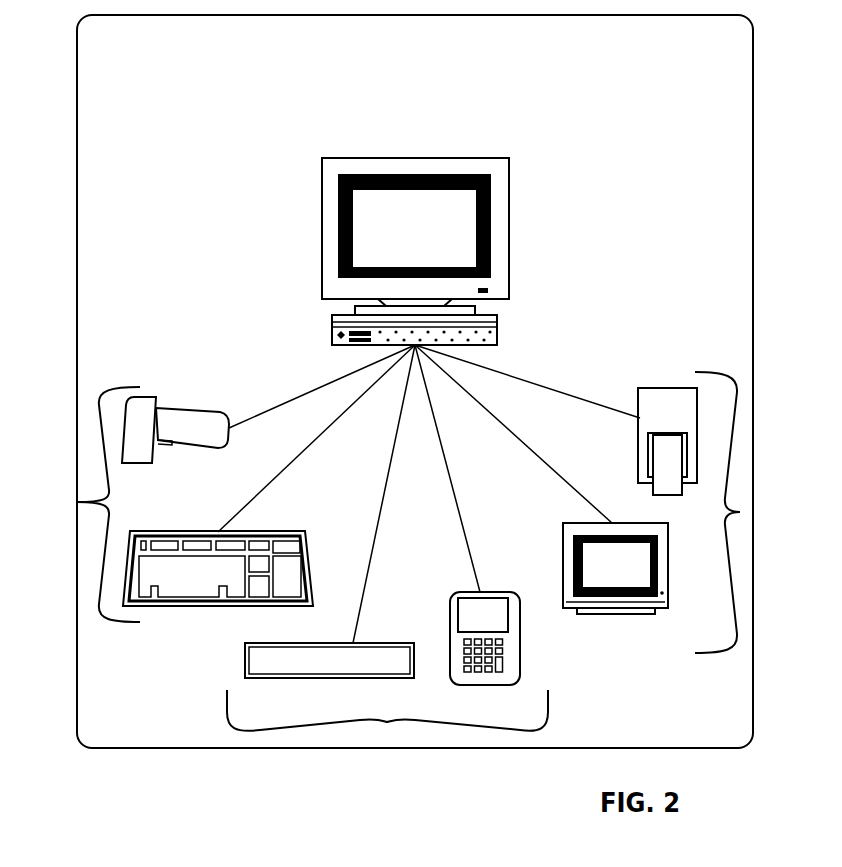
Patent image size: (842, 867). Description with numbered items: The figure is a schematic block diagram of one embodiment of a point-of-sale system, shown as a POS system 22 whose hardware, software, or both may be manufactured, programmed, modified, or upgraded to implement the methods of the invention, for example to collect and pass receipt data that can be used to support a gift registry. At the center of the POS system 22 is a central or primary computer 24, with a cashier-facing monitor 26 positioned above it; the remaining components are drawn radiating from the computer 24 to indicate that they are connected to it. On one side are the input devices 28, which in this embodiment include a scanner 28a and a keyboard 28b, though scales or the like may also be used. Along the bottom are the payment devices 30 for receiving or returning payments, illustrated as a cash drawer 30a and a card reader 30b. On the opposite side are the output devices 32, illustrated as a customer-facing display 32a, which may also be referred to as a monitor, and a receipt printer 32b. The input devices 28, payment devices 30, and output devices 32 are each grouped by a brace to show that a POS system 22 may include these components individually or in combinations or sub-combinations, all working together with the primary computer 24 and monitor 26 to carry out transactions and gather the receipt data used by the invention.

The POS system 22 is at (587, 84).
The primary computer 24 is at (520, 311).
The monitor 26 is at (300, 192).
The input devices 28 is at (77, 502).
The scanner 28a is at (190, 428).
The keyboard 28b is at (283, 540).
The payment devices 30 is at (387, 722).
The cash drawer 30a is at (328, 662).
The card reader 30b is at (475, 593).
The output devices 32 is at (740, 512).
The customer-facing display 32a is at (612, 577).
The receipt printer 32b is at (658, 410).